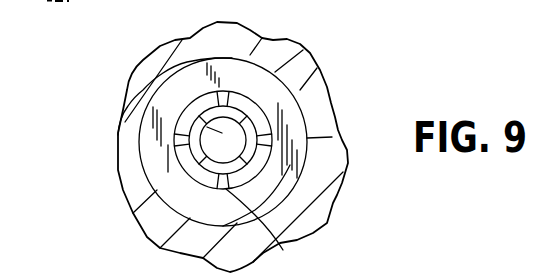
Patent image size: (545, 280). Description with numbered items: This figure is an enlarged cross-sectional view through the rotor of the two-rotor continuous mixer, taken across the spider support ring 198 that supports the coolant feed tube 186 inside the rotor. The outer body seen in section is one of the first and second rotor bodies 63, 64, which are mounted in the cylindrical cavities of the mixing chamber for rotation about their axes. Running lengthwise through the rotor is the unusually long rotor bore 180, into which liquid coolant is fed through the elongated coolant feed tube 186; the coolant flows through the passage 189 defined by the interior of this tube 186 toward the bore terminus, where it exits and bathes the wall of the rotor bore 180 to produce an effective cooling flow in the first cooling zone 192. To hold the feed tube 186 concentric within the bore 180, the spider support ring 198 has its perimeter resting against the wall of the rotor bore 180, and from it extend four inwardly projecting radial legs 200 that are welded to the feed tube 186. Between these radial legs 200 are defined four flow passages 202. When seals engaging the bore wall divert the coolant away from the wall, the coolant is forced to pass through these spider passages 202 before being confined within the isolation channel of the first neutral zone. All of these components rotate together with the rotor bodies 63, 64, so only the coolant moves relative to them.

The first rotor body 63 is at (340, 198).
The second rotor body 64 is at (378, 198).
The rotor bore 180 is at (192, 162).
The coolant feed tube 186 is at (262, 110).
The passage 189 is at (175, 81).
The first cooling zone 192 is at (421, 0).
The spider support ring 198 is at (300, 127).
The radial legs 200 is at (278, 250).
The flow passages 202 is at (190, 113).